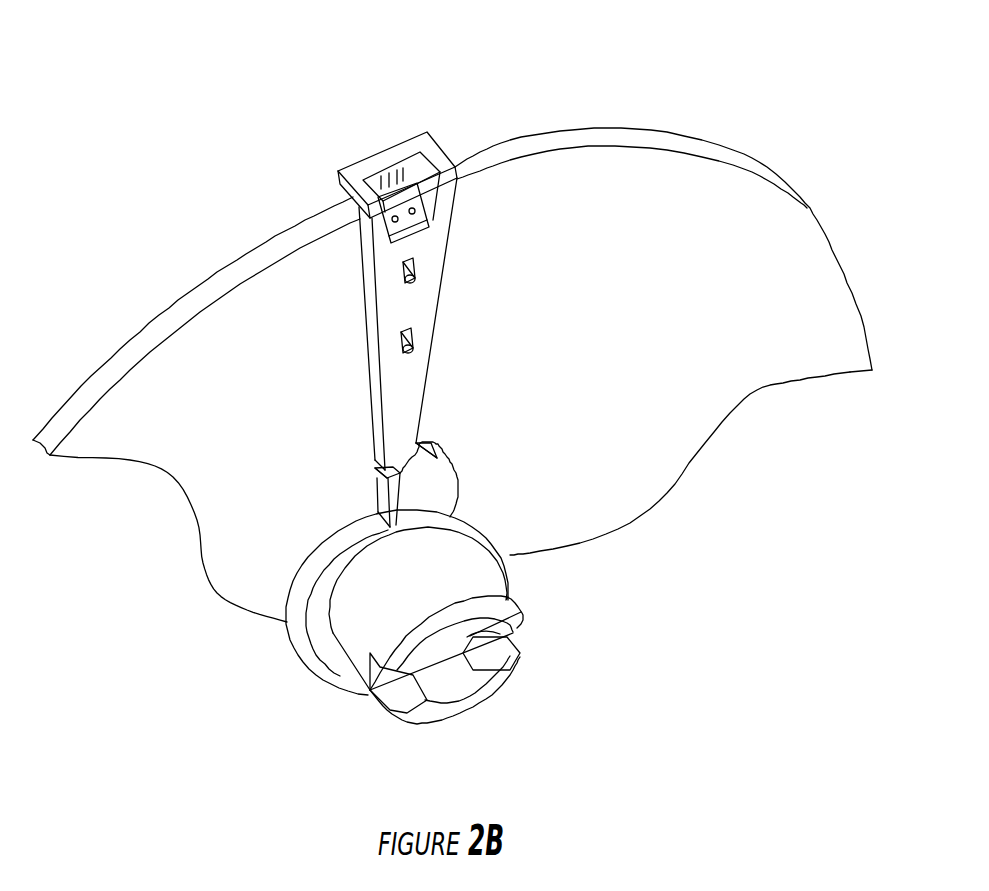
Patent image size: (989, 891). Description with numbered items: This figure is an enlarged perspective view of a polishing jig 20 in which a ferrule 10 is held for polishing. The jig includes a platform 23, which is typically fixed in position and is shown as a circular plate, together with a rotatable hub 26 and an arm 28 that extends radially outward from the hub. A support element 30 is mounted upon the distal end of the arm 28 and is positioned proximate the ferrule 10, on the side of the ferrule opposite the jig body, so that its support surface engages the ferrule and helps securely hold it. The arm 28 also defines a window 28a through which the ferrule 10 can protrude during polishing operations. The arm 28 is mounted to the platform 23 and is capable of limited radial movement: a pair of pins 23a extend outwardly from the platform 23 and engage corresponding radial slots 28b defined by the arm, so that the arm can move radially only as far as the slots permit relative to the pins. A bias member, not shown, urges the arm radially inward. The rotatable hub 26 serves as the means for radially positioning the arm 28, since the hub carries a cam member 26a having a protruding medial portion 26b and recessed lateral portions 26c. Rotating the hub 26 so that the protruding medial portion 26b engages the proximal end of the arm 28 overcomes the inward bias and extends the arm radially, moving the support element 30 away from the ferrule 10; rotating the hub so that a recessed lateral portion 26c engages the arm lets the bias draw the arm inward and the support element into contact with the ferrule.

The ferrule 10 is at (455, 172).
The polishing jig 20 is at (295, 182).
The platform 23 is at (633, 178).
The pins 23a is at (403, 280).
The rotatable hub 26 is at (462, 577).
The cam member 26a is at (443, 490).
The protruding medial portion 26b is at (433, 443).
The recessed lateral portions 26c is at (447, 457).
The arm 28 is at (410, 407).
The window 28a is at (415, 228).
The radial slots 28b is at (407, 262).
The support element 30 is at (404, 168).